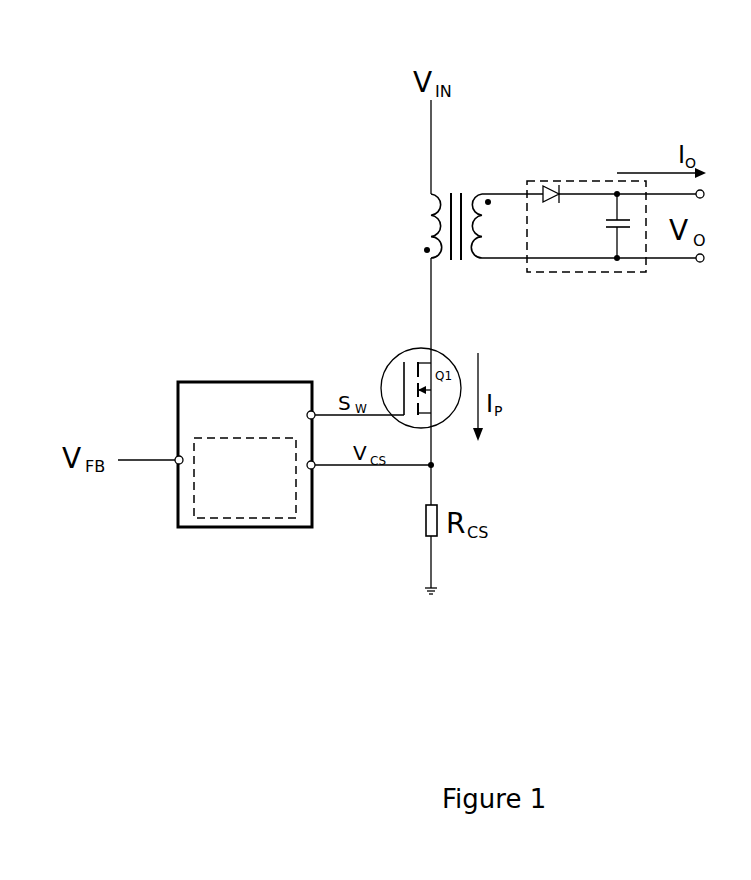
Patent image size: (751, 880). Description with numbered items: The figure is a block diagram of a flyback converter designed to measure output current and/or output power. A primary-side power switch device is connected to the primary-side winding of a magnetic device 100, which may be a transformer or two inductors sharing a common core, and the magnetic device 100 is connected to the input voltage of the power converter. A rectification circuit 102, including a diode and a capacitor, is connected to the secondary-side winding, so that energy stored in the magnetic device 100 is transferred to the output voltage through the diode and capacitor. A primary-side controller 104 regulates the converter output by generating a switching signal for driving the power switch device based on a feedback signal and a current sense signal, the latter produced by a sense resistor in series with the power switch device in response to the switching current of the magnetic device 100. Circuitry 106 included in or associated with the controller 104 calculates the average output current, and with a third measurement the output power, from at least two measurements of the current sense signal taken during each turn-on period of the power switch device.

The magnetic device 100 is at (466, 153).
The rectification circuit 102 is at (580, 272).
The primary-side controller 104 is at (232, 428).
The circuitry 106 is at (232, 508).